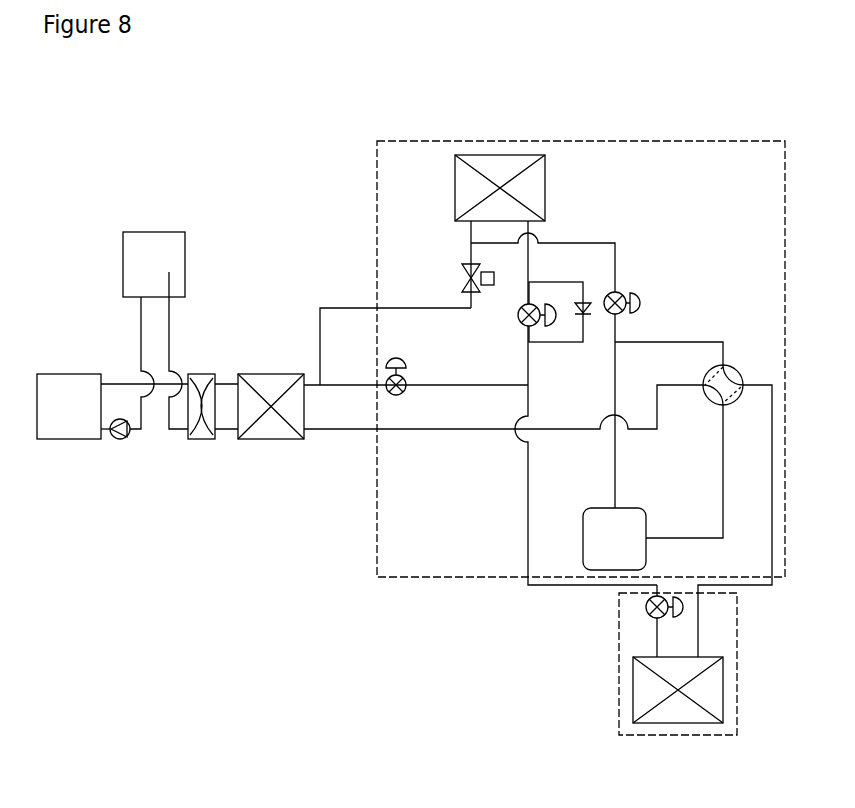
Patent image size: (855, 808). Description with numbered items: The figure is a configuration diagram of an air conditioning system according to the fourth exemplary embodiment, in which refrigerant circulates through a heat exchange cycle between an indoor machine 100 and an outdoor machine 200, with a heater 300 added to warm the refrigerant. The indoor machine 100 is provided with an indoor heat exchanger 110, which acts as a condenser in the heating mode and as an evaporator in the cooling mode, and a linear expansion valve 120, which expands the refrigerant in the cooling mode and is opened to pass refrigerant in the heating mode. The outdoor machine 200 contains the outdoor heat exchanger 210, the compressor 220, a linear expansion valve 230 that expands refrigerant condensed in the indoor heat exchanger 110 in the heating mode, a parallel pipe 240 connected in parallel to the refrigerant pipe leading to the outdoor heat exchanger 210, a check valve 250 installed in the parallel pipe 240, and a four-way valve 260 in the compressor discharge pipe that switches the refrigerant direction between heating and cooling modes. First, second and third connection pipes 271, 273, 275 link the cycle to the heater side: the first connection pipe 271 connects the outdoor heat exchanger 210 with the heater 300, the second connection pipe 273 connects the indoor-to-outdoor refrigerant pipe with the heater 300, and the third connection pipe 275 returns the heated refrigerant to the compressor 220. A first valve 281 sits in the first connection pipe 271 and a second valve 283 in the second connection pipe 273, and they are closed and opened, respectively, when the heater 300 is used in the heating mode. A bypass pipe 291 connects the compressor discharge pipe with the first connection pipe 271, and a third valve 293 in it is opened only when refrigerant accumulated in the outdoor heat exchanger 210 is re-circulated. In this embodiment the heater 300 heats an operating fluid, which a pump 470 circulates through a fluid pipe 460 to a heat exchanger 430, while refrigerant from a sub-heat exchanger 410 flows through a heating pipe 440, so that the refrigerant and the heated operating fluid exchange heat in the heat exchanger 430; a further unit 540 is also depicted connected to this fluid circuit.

The indoor machine 100 is at (618, 716).
The indoor heat exchanger 110 is at (633, 690).
The linear expansion valve 120 is at (646, 607).
The outdoor machine 200 is at (611, 140).
The outdoor heat exchanger 210 is at (494, 155).
The compressor 220 is at (636, 508).
The linear expansion valve 230 is at (551, 328).
The parallel pipe 240 is at (559, 282).
The check valve 250 is at (588, 303).
The 4-way valve 260 is at (735, 372).
The first connection pipe 271 is at (341, 307).
The second connection pipe 273 is at (482, 384).
The third connection pipe 275 is at (482, 432).
The first valve 281 is at (462, 280).
The second valve 283 is at (396, 357).
The bypass pipe 291 is at (599, 243).
The third valve 293 is at (644, 303).
The heater 300 is at (62, 440).
The sub-heat exchanger 410 is at (270, 440).
The heat exchanger 430 is at (201, 440).
The heating pipe 440 is at (228, 384).
The fluid pipe 460 is at (108, 384).
The pump 470 is at (114, 440).
The control unit 540 is at (154, 232).